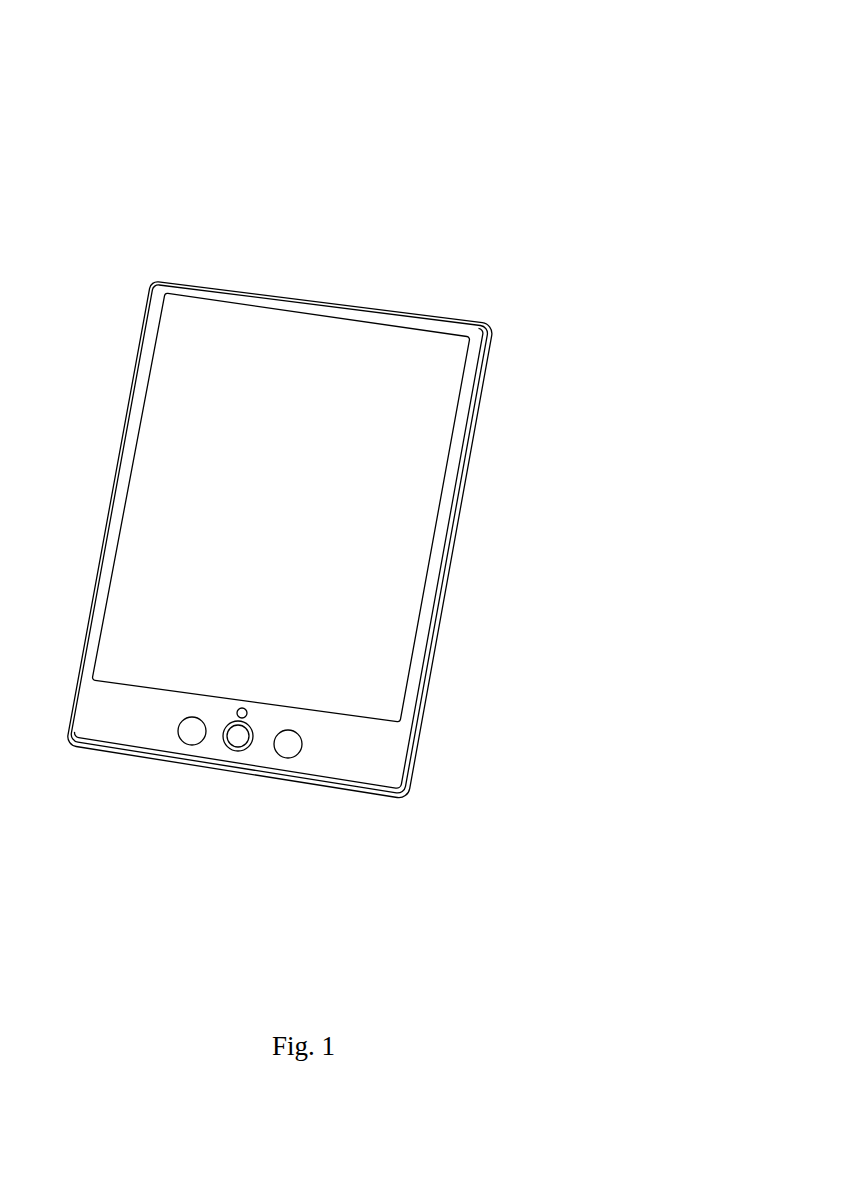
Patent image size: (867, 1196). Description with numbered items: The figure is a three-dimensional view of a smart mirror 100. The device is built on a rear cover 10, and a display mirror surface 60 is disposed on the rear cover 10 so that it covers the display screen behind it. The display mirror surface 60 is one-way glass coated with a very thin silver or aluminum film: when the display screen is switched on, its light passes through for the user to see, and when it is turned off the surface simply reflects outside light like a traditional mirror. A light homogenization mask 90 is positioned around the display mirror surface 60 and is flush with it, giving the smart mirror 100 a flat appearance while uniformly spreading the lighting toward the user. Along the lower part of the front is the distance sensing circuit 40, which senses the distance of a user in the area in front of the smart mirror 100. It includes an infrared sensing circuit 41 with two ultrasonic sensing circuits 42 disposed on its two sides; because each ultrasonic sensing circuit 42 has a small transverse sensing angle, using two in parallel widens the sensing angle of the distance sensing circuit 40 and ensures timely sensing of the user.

The smart mirror 100 is at (451, 97).
The rear cover 10 is at (454, 560).
The light homogenization mask 90 is at (470, 428).
The display mirror surface 60 is at (387, 365).
The distance sensing circuit 40 is at (297, 935).
The infrared sensing circuit 41 is at (234, 741).
The ultrasonic sensing circuit 42 is at (195, 728).